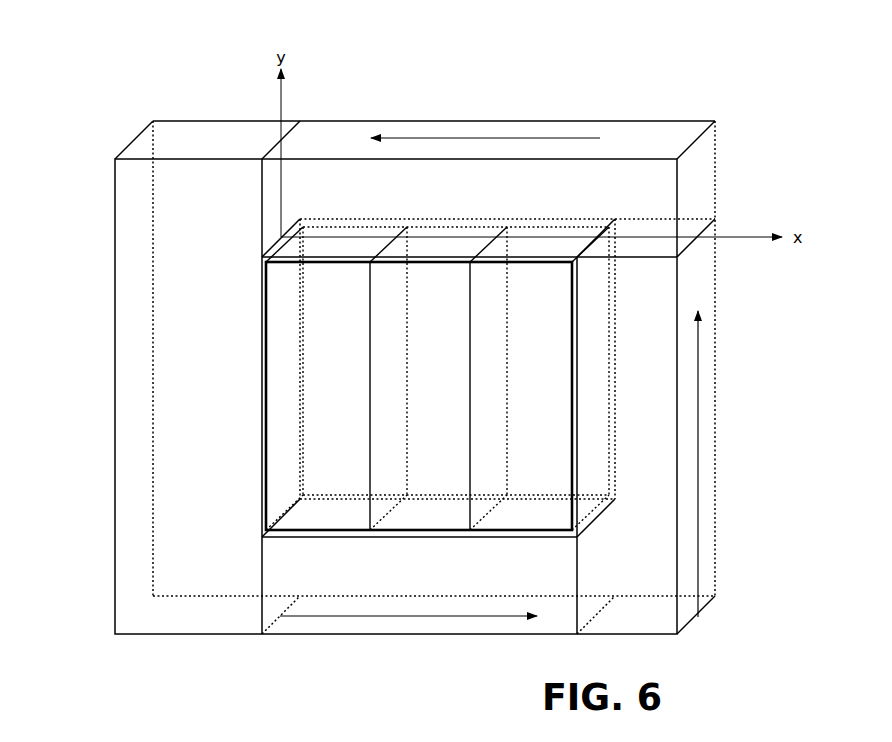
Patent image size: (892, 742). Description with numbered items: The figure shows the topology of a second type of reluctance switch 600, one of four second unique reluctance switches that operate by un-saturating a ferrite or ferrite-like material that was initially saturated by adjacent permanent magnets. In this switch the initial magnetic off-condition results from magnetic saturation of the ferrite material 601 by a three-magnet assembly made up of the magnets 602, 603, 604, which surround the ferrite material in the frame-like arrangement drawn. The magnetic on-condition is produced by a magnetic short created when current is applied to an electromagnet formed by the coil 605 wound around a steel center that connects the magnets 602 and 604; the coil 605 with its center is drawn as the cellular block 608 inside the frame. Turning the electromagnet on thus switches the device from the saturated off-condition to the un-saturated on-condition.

The reluctance switch 600 is at (116, 112).
The ferrite material 601 is at (167, 452).
The magnet 602 is at (432, 618).
The magnet 603 is at (703, 463).
The magnet 604 is at (497, 134).
The coil 605 is at (287, 447).
The inner block 608 is at (413, 437).